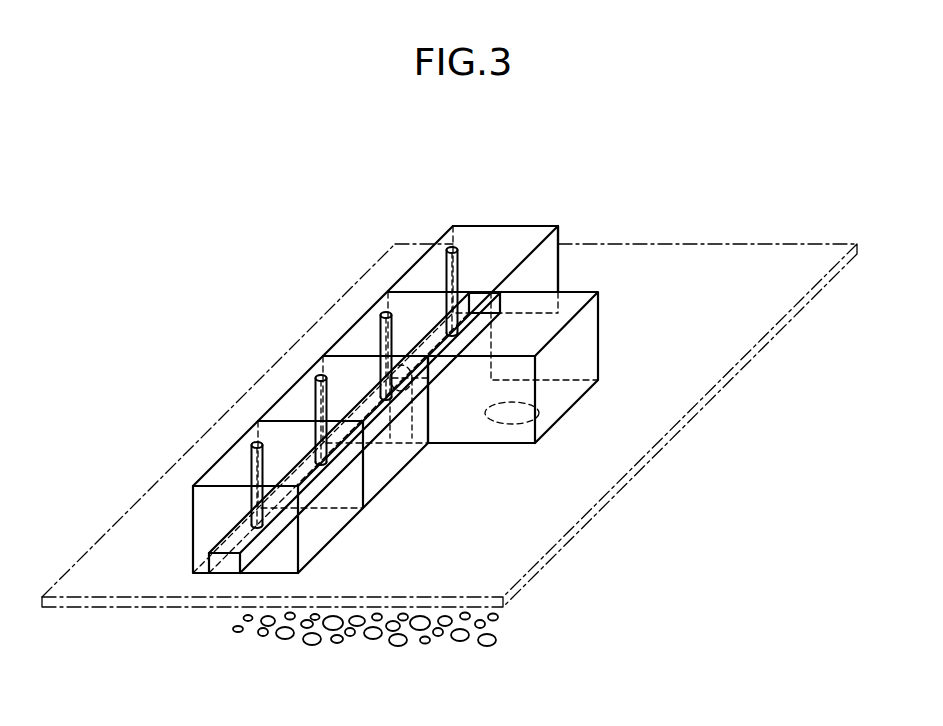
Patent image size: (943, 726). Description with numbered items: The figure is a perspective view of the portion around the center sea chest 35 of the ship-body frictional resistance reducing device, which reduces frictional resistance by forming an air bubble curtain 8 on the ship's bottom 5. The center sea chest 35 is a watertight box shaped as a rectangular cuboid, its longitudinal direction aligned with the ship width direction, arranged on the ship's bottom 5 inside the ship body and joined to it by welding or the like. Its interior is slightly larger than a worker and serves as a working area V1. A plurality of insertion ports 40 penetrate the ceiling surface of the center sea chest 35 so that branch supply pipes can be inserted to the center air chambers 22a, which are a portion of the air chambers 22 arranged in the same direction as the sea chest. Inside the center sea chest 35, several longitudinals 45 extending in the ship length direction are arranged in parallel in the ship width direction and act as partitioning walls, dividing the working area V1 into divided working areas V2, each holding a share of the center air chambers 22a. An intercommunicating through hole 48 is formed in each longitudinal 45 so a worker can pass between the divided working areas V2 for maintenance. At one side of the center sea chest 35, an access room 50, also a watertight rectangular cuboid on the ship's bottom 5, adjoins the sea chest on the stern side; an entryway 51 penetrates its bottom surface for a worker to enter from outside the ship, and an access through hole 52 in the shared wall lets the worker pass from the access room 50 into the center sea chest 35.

The ship's bottom 5 is at (150, 612).
The air bubble curtain 8 is at (348, 649).
The air chamber 22 is at (337, 399).
The center air chamber 22a is at (305, 483).
The center sea chest 35 is at (494, 226).
The insertion port 40 is at (385, 312).
The longitudinal 45 is at (363, 480).
The intercommunicating through hole 48 is at (330, 510).
The access room 50 is at (577, 292).
The entryway 51 is at (543, 405).
The access through hole 52 is at (470, 347).
The working area V1 is at (502, 256).
The divided working area V2 is at (307, 396).